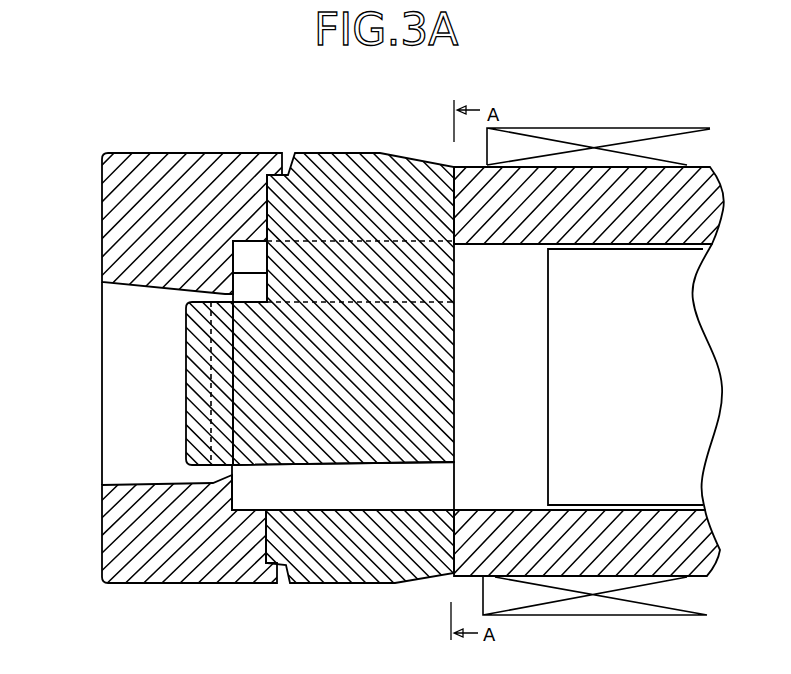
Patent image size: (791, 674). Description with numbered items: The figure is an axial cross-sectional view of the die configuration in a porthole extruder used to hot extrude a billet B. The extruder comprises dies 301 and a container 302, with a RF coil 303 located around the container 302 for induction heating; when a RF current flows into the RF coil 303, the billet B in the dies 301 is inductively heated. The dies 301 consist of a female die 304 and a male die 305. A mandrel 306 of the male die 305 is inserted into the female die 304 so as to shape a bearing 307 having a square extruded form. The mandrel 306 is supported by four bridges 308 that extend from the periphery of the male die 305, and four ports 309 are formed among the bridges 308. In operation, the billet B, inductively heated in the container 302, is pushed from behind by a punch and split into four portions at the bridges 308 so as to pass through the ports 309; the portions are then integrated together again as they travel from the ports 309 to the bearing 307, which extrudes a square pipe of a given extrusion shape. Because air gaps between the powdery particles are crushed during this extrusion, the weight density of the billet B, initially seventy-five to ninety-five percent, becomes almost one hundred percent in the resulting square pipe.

The dies 301 is at (358, 130).
The container 302 is at (564, 178).
The RF coil 303 is at (637, 150).
The female die 304 is at (172, 153).
The male die 305 is at (400, 153).
The mandrel 306 is at (186, 404).
The bearing 307 is at (225, 296).
The bridges 308 is at (303, 250).
The ports 309 is at (336, 490).
The billet B is at (672, 323).